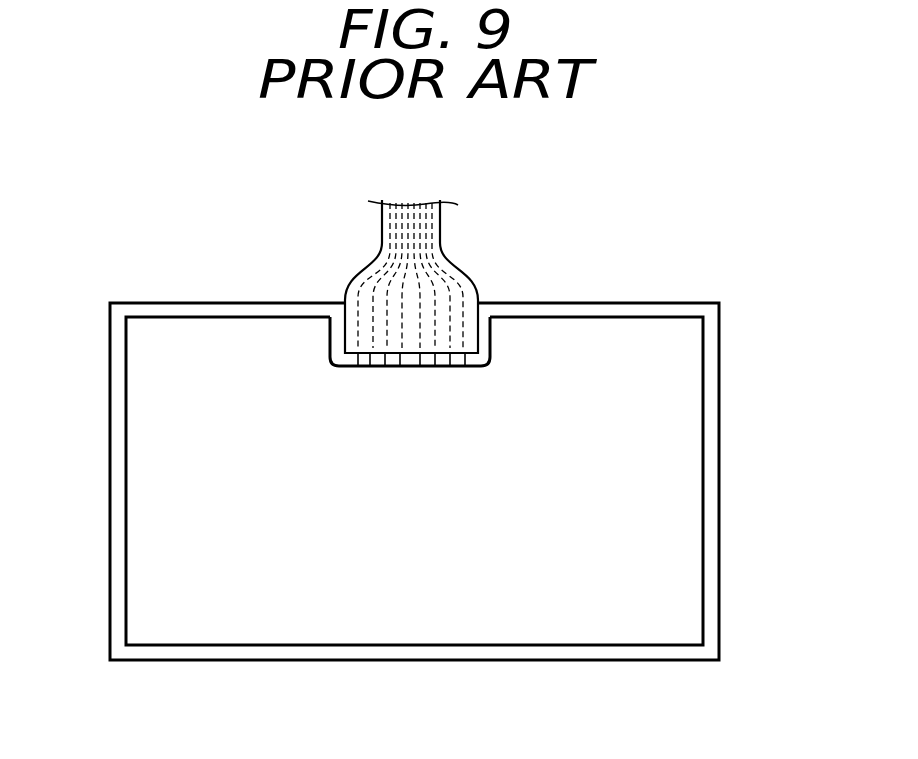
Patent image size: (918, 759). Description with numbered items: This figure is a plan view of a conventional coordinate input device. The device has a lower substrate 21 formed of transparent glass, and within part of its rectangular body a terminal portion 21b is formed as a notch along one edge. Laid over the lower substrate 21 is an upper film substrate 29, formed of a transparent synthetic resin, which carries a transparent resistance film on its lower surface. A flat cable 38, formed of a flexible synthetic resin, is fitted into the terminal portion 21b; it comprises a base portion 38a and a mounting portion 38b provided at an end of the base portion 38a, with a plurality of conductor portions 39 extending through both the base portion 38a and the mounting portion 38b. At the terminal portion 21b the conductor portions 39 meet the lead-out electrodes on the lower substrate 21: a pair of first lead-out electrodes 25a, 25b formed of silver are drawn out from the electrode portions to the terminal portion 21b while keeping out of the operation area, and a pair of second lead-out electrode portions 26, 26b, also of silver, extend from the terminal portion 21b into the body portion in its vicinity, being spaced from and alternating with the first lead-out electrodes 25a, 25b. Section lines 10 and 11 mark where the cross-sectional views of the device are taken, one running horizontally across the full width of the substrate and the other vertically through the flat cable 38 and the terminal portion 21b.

The lower substrate 21 is at (722, 611).
The terminal portion 21b is at (338, 317).
The upper film substrate 29 is at (687, 370).
The flat cable 38 is at (435, 263).
The base portion 38a is at (382, 228).
The mounting portion 38b is at (356, 288).
The conductor portions 39 is at (467, 312).
The second lead-out electrode portions 26 is at (363, 360).
The first lead-out electrode 25a is at (395, 370).
The second lead-out electrode portion 26b is at (430, 370).
The first lead-out electrode 25b is at (458, 369).
The section line 10- 10 is at (55, 497).
The section line 11- 11 is at (423, 195).